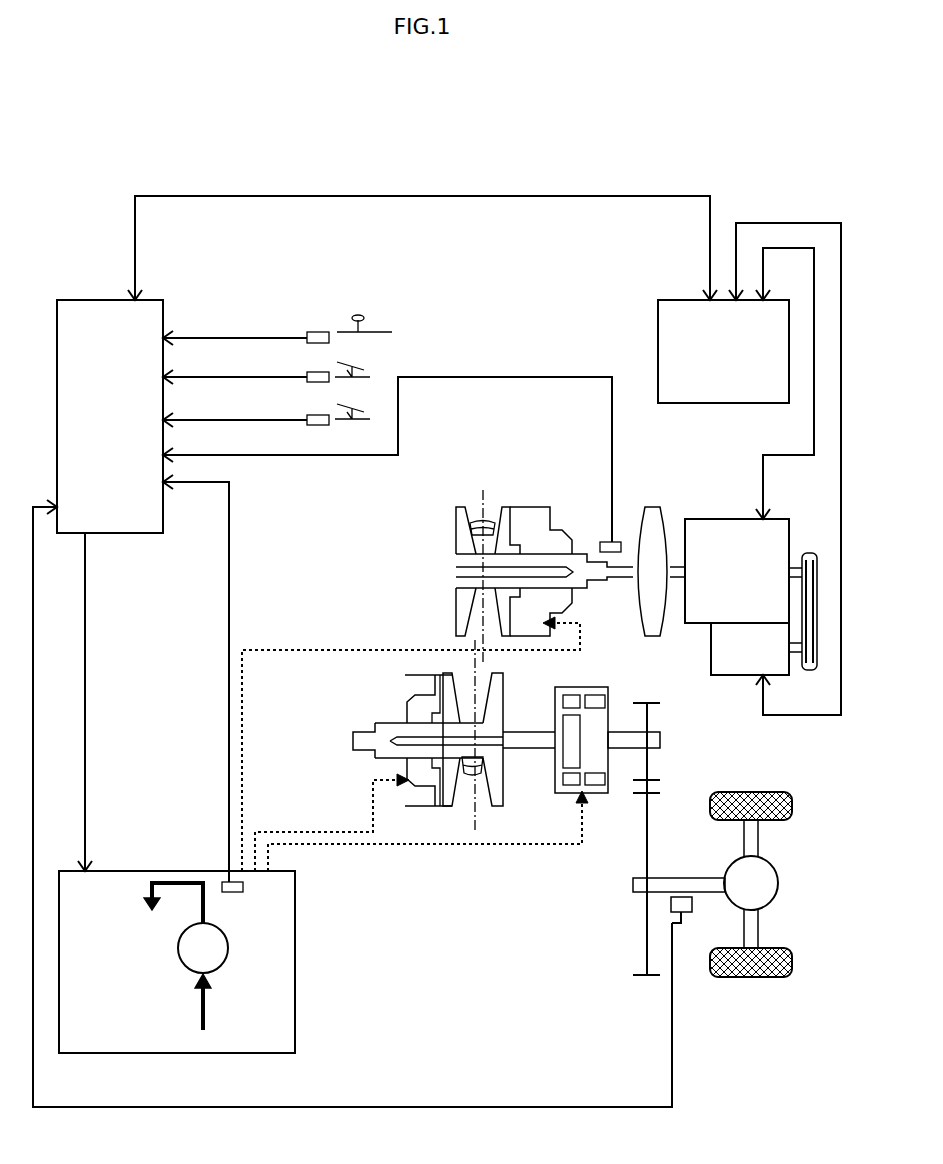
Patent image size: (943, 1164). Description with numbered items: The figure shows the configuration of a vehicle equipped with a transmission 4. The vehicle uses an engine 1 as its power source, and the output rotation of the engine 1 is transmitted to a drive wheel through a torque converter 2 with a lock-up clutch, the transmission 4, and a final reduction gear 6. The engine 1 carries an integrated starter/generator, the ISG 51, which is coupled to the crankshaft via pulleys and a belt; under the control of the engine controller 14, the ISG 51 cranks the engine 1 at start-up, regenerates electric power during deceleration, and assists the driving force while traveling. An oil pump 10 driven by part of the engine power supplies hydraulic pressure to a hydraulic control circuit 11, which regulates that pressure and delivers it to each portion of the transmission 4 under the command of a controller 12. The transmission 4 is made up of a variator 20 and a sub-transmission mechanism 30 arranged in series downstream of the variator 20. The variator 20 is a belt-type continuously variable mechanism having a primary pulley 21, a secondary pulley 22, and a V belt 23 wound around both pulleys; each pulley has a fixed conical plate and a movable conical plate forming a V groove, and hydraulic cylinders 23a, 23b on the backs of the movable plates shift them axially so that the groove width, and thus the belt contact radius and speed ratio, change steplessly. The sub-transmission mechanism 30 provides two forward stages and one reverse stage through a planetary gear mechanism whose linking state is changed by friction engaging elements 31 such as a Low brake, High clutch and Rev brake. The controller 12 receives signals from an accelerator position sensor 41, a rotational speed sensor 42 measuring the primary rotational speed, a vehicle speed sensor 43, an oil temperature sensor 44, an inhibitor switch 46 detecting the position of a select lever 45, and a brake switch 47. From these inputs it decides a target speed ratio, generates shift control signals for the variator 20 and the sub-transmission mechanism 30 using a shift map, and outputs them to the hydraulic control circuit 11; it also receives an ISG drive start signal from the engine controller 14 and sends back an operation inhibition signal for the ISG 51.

The engine 1 is at (738, 519).
The torque converter 2 is at (658, 507).
The transmission 4 is at (582, 462).
The final reduction gear 6 is at (778, 883).
The oil pump 10 is at (228, 948).
The hydraulic control circuit 11 is at (108, 871).
The controller 12 is at (78, 300).
The engine controller (ECU) 14 is at (658, 323).
The variator 20 is at (418, 632).
The primary pulley 21 is at (470, 507).
The secondary pulley 22 is at (378, 722).
The V belt 23 is at (478, 648).
The hydraulic cylinder 23a is at (560, 543).
The hydraulic cylinder 23b is at (418, 710).
The sub-transmission mechanism 30 is at (606, 759).
The friction engaging elements 31 is at (600, 793).
The accelerator position sensor 41 is at (322, 378).
The rotational speed sensor 42 is at (618, 542).
The vehicle speed sensor 43 is at (686, 912).
The oil temperature sensor 44 is at (224, 882).
The select lever 45 is at (372, 332).
The inhibitor switch 46 is at (318, 332).
The brake switch 47 is at (322, 424).
The integrated starter/generator (ISG) 51 is at (740, 675).